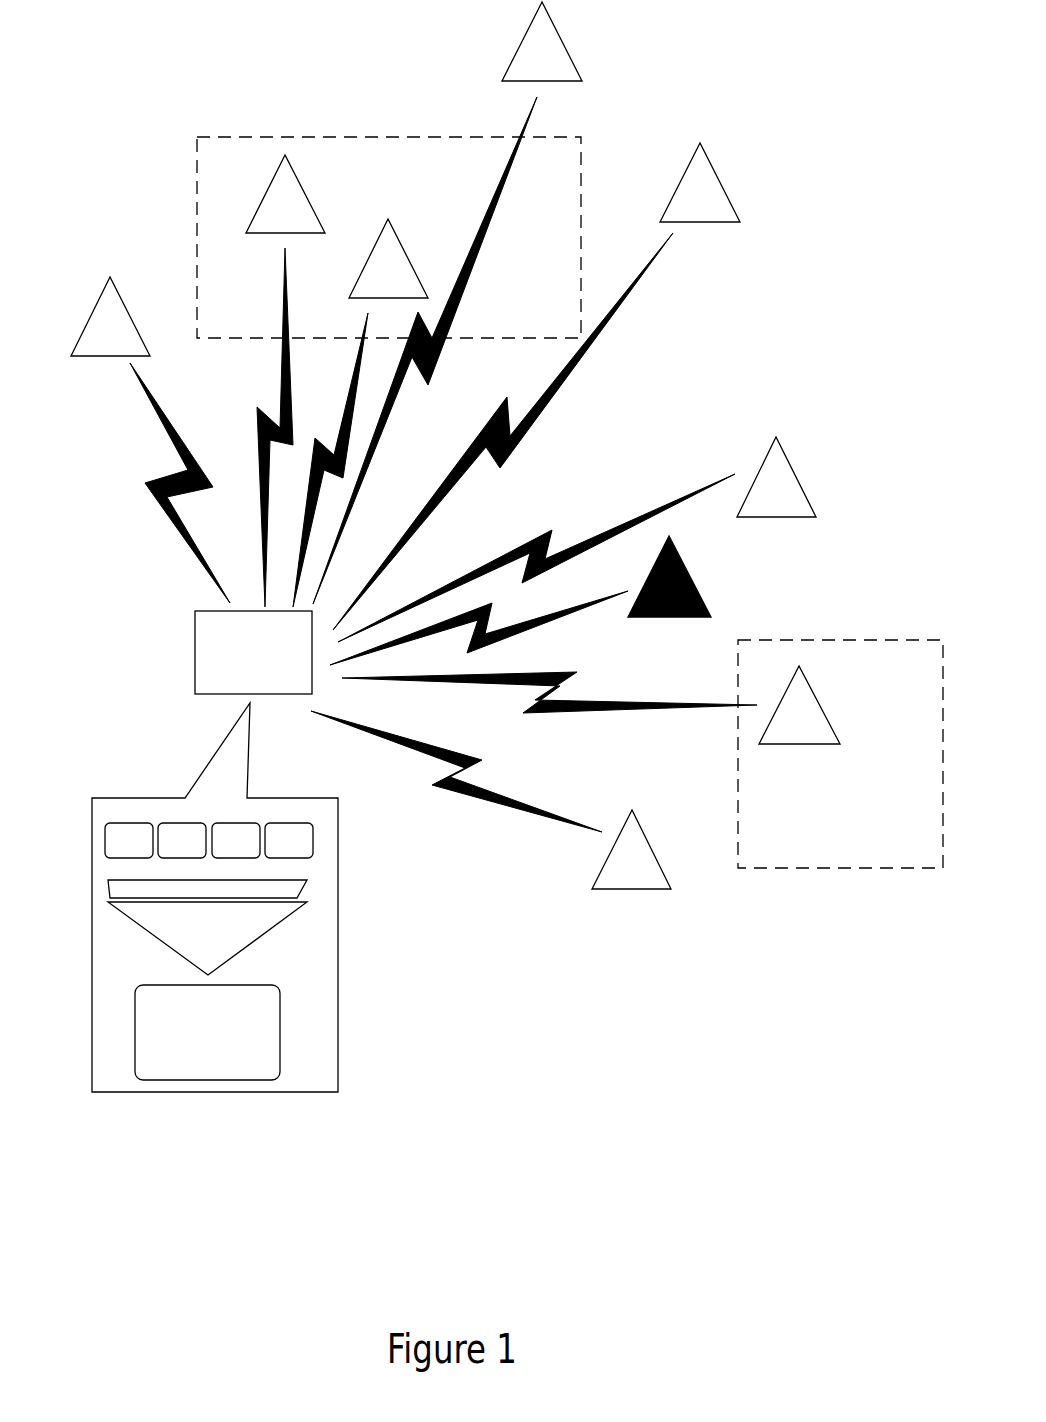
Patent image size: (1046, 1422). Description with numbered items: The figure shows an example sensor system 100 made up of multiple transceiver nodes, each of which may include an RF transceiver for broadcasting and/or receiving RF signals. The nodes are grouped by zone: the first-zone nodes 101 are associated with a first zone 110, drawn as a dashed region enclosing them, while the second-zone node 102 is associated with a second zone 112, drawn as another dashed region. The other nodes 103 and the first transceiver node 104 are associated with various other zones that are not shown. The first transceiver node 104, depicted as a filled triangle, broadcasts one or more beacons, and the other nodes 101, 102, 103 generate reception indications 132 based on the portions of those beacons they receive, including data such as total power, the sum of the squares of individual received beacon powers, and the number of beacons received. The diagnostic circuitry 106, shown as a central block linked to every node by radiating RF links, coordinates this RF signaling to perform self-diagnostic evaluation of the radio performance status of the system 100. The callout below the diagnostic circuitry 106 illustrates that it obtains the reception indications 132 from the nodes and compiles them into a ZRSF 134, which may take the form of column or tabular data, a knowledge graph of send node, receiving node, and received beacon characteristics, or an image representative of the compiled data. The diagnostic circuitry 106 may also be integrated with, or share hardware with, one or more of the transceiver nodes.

The sensor system 100 is at (99, 47).
The first-zone nodes 101 is at (270, 218).
The second-zone nodes 102 is at (784, 729).
The other nodes 103 is at (95, 341).
The first transceiver node 104 is at (654, 602).
The diagnostic circuitry 106 is at (237, 663).
The first zone 110 is at (418, 137).
The second zone 112 is at (879, 640).
The reception indications 132 is at (114, 851).
The ZRSF 134 is at (193, 1043).